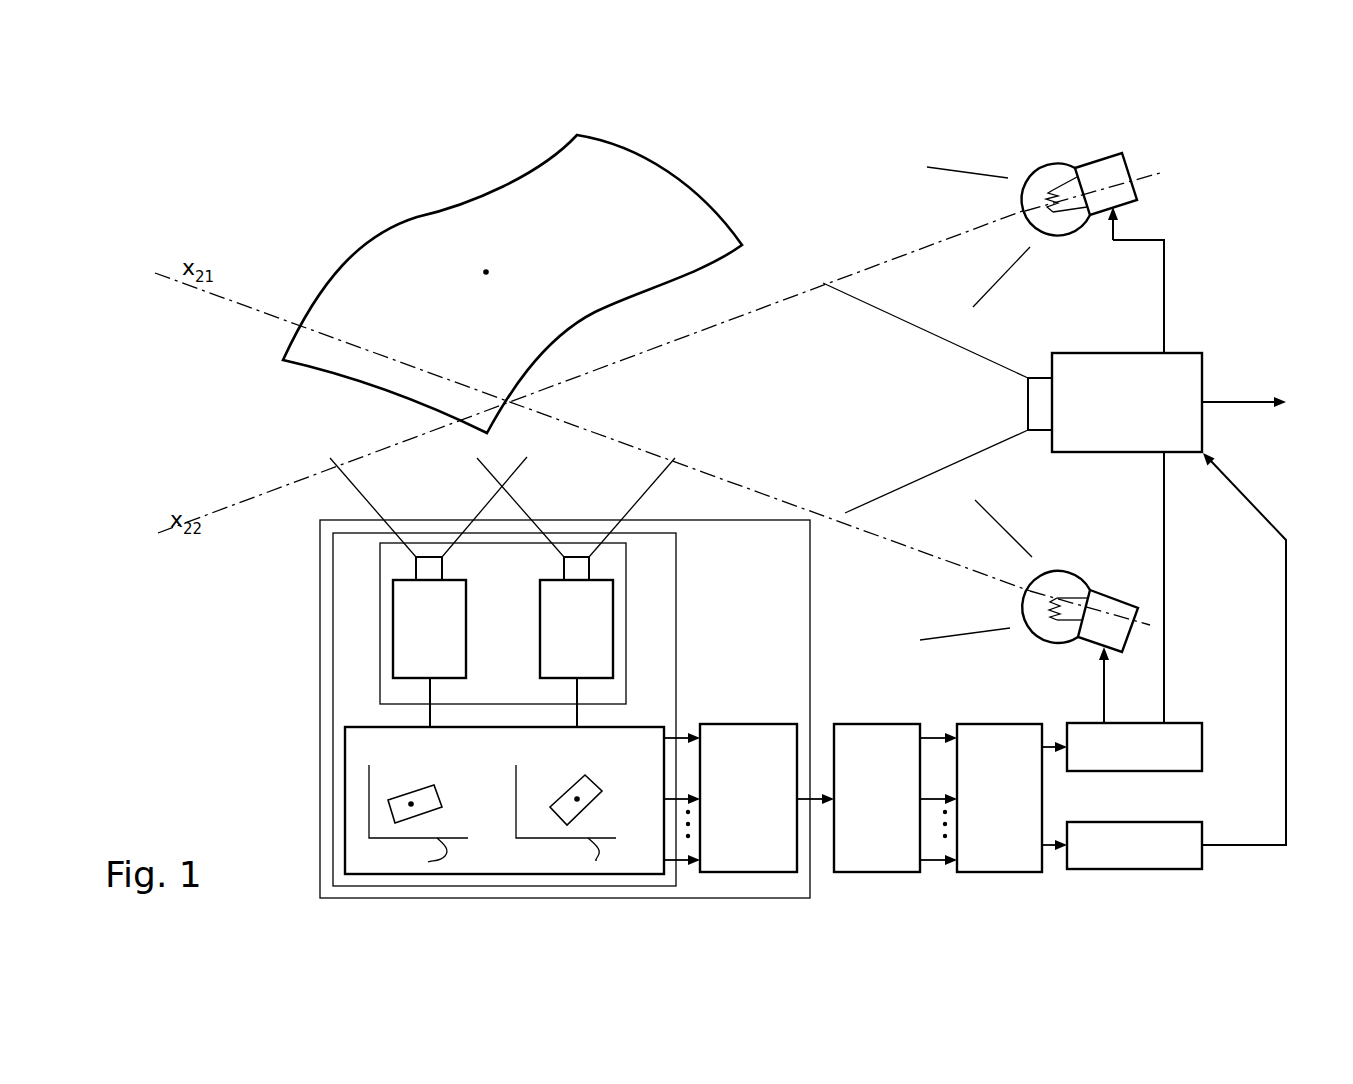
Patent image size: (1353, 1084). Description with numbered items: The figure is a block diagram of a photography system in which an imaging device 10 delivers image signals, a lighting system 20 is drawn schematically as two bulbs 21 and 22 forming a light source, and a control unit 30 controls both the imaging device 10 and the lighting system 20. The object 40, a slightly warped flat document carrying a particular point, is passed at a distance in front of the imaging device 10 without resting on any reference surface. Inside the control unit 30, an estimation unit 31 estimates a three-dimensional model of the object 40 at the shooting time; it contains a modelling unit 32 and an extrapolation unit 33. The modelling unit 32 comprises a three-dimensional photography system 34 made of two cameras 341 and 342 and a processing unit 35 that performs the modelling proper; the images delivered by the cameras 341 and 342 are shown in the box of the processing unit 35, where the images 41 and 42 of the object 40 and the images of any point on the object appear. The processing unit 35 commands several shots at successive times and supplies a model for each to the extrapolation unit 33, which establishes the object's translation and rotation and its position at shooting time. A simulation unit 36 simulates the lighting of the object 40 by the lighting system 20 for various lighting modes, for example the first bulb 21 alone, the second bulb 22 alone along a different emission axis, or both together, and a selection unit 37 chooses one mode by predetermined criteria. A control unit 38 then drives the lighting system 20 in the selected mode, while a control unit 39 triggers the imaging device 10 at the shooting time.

The imaging device 10 is at (1085, 353).
The lighting system 20 is at (1175, 150).
The bulb 21 is at (1117, 599).
The bulb 22 is at (1162, 172).
The control unit 30 is at (310, 888).
The estimation unit 31 is at (809, 665).
The modelling unit 32 is at (675, 657).
The extrapolation unit 33 is at (767, 798).
The 3D photography system 34 is at (380, 665).
The camera 341 is at (496, 616).
The camera 342 is at (647, 612).
The processing unit 35 is at (345, 843).
The simulation unit 36 is at (895, 798).
The selection unit 37 is at (1012, 798).
The control unit 38 is at (1134, 747).
The control unit 39 is at (1176, 661).
The object 40 is at (497, 200).
The image of the object 41 is at (442, 801).
The image of the object 42 is at (602, 788).